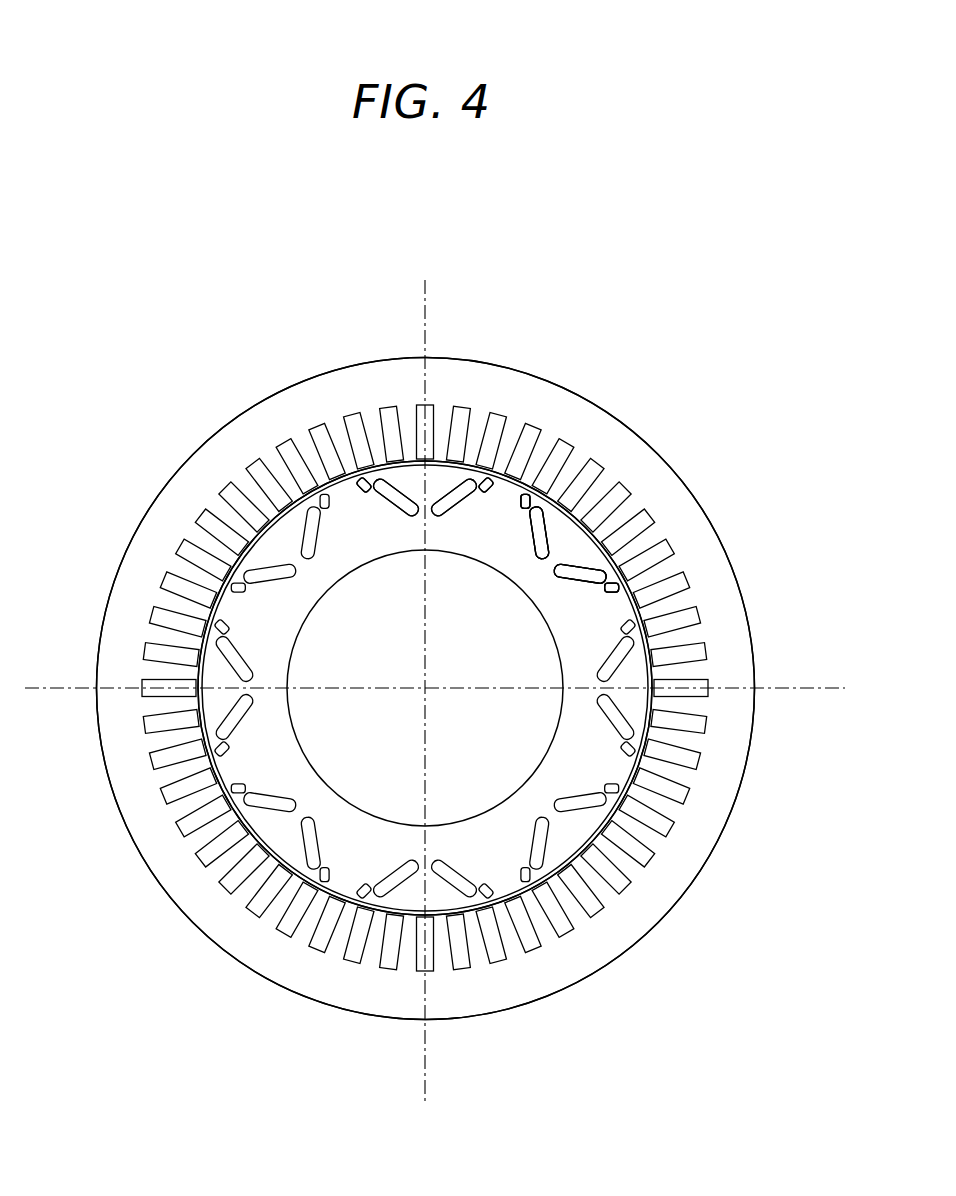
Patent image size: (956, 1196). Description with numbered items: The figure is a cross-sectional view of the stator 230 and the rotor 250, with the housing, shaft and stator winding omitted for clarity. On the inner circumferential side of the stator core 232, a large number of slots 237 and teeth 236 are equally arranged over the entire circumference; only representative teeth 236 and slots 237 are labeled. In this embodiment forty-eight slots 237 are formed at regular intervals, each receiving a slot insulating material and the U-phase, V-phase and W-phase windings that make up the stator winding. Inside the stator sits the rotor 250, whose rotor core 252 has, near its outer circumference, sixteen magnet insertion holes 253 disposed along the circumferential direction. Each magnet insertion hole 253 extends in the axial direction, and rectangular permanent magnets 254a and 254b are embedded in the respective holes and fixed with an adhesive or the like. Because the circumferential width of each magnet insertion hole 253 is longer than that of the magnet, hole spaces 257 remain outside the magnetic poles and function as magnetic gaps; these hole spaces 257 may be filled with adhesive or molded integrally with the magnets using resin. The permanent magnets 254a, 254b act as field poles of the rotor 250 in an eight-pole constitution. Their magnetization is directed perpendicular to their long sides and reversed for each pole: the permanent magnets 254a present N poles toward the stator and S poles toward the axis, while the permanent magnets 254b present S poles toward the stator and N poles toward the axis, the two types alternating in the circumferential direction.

The stator 230 is at (150, 482).
The stator core 232 is at (245, 443).
The teeth 236 is at (514, 432).
The slots 237 is at (530, 433).
The rotor 250 is at (327, 586).
The rotor core 252 is at (360, 505).
The magnet insertion holes 253 is at (613, 560).
The permanent magnet 254a is at (637, 490).
The permanent magnet 254b is at (463, 480).
The hole spaces 257 is at (543, 520).